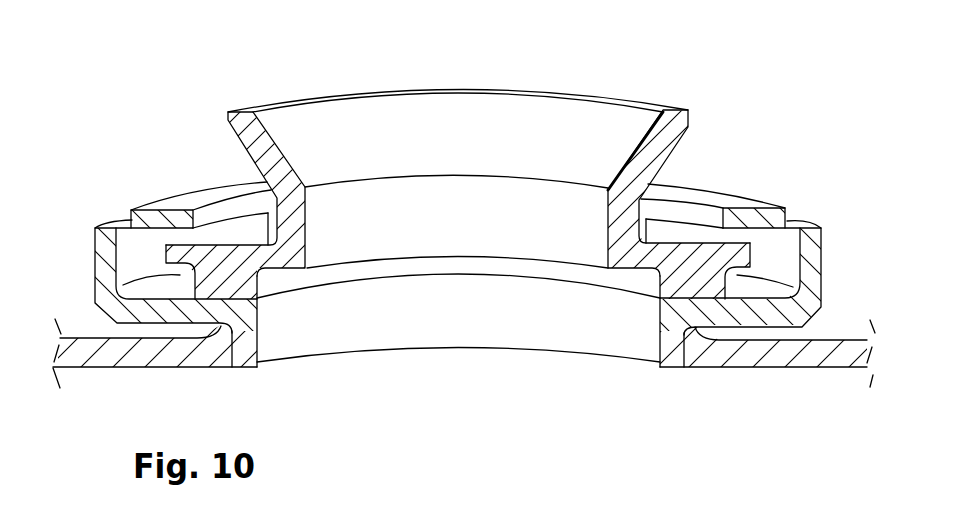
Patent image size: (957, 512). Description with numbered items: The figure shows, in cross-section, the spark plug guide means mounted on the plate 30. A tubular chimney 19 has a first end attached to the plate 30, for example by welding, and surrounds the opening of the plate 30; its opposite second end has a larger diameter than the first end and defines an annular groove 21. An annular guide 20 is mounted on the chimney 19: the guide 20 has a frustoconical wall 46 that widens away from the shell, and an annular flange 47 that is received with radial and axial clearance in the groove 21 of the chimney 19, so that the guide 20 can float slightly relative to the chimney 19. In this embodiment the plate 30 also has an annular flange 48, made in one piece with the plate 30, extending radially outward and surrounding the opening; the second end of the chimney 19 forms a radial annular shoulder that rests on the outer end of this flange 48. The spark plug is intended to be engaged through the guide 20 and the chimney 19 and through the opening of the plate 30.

The tubular chimney 19 is at (821, 266).
The annular guide 20 is at (530, 84).
The annular groove 21 is at (143, 259).
The plate 30 is at (758, 372).
The frustoconical wall 46 is at (438, 135).
The annular flange 47 is at (233, 250).
The annular flange 48 is at (221, 331).